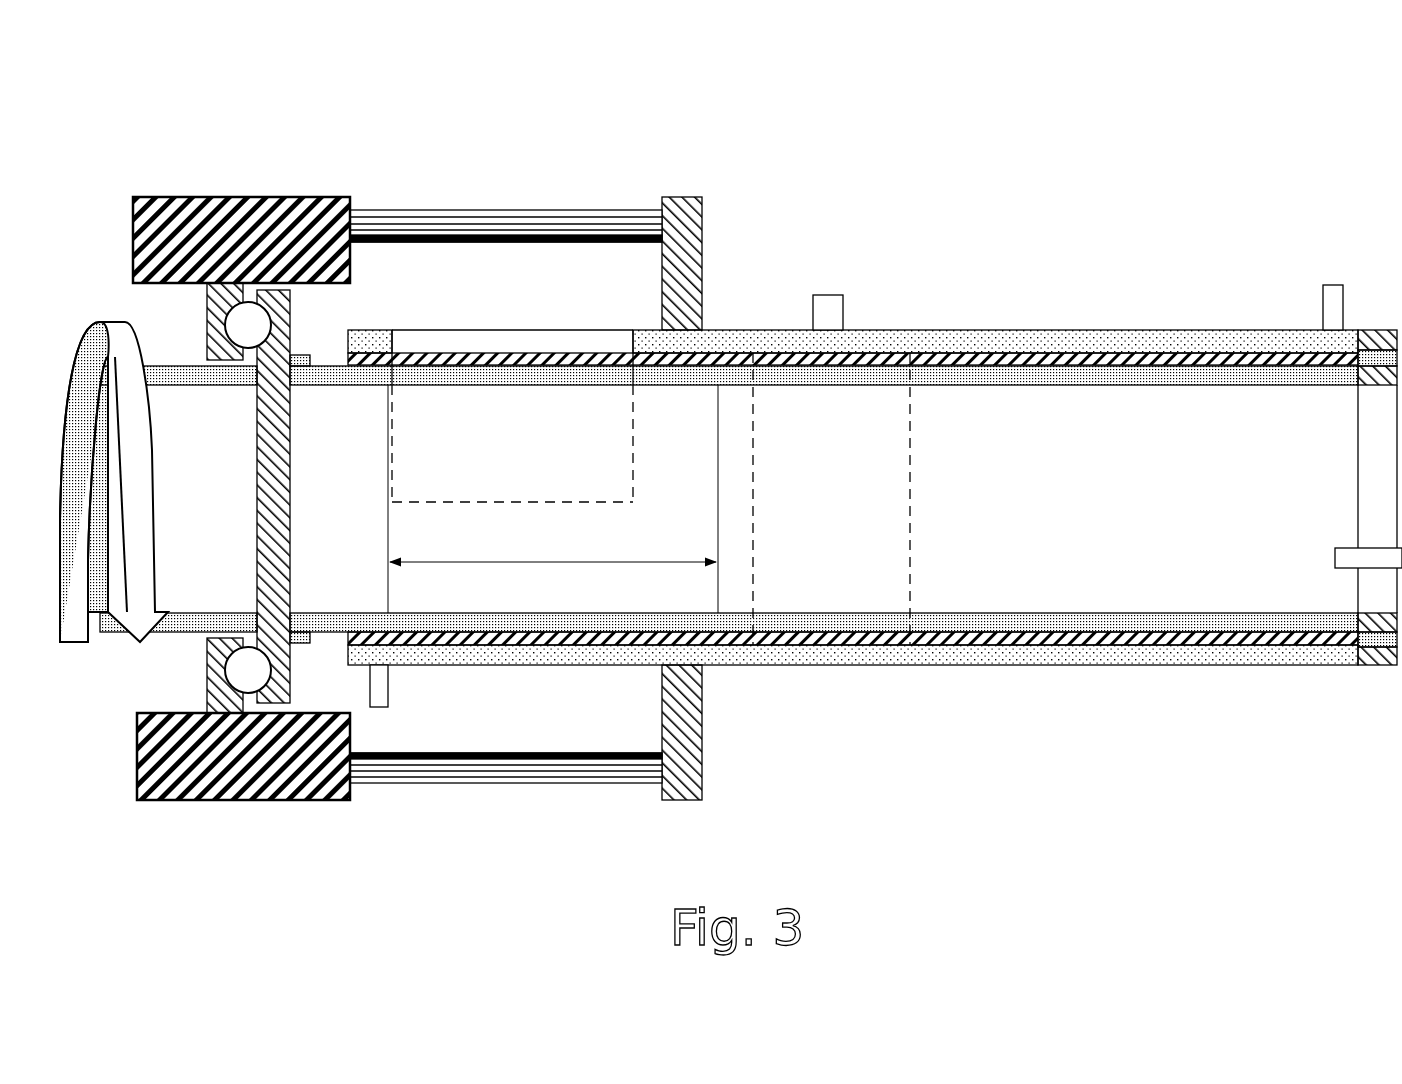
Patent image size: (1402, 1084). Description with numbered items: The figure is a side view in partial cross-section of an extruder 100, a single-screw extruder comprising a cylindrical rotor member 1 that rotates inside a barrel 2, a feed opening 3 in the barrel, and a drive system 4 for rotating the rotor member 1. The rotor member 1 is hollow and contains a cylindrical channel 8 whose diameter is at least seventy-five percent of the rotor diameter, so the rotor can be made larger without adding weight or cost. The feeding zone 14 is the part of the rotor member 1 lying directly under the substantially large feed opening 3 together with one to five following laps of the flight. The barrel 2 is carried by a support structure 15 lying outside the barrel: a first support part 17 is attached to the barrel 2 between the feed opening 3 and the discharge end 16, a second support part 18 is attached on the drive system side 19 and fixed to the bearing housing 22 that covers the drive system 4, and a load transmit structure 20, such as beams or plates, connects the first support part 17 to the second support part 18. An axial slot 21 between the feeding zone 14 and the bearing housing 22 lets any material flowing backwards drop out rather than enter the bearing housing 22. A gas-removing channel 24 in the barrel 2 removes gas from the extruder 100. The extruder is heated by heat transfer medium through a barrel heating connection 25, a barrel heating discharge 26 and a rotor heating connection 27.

The rotor member 1 is at (947, 624).
The barrel 2 is at (783, 662).
The feed opening 3 is at (562, 432).
The drive system 4 is at (208, 140).
The cylindrical channel 8 is at (973, 516).
The feeding zone 14 is at (553, 499).
The support structure 15 is at (718, 142).
The discharge end 16 is at (1370, 262).
The first support part 17 is at (692, 242).
The second support part 18 is at (290, 233).
The drive system side 19 is at (330, 147).
The load transmit structure 20 is at (466, 210).
The axial slot 21 is at (320, 358).
The bearing housing 22 is at (361, 714).
The gas-removing channel 24 is at (833, 318).
The barrel heating connection 25 is at (1332, 302).
The barrel heating discharge 26 is at (390, 687).
The rotor heating connection 27 is at (1360, 560).
The extruder 100 is at (1132, 766).